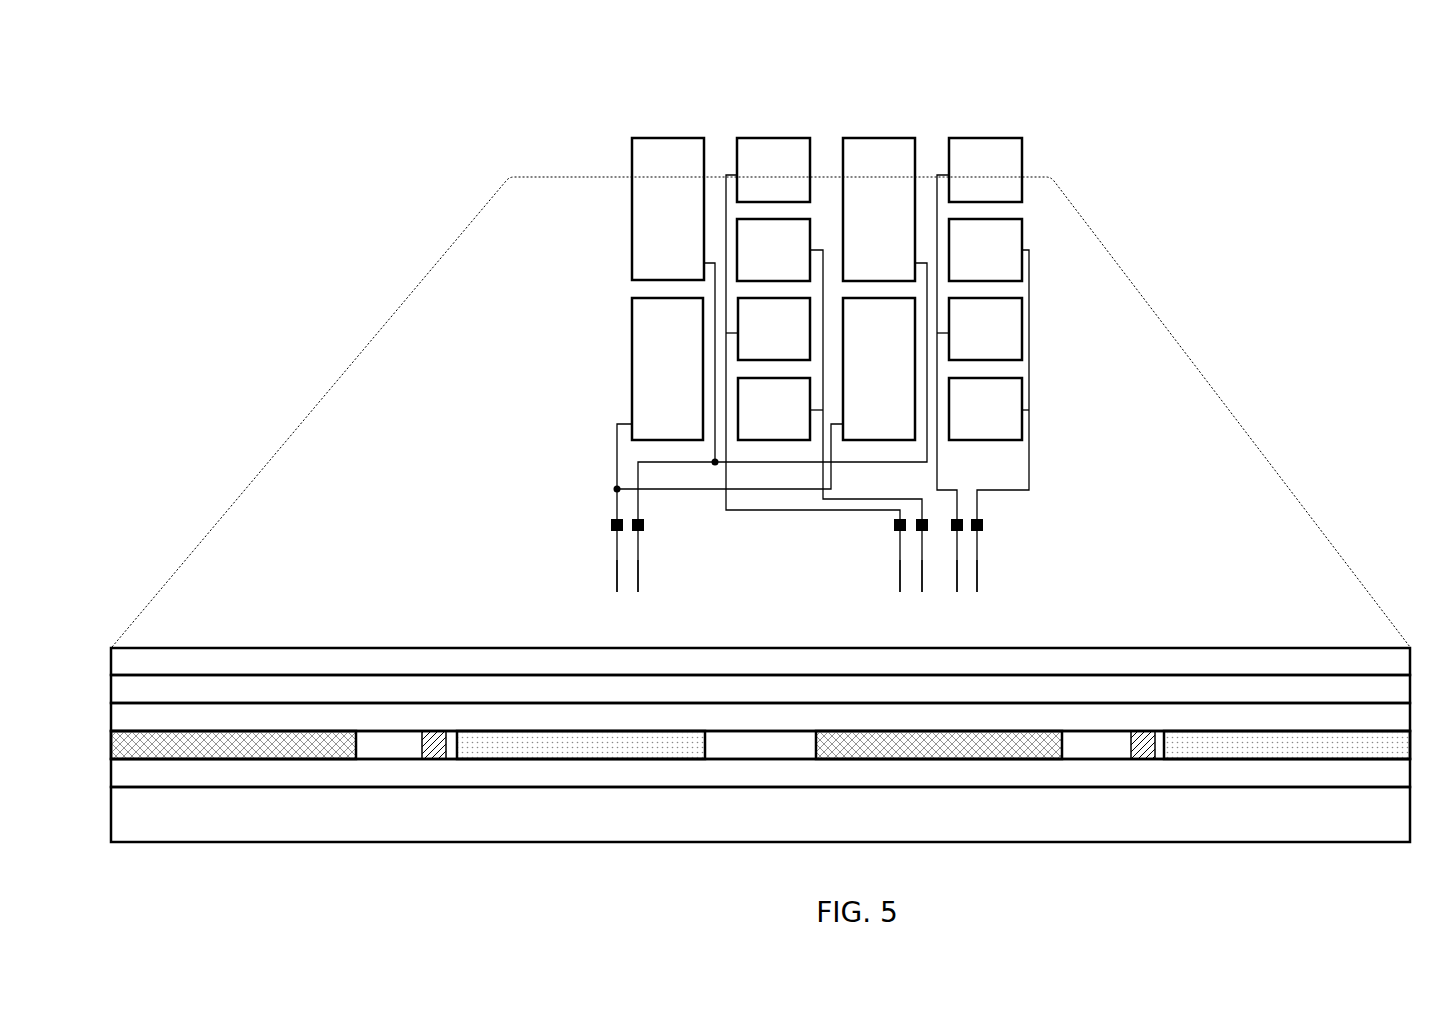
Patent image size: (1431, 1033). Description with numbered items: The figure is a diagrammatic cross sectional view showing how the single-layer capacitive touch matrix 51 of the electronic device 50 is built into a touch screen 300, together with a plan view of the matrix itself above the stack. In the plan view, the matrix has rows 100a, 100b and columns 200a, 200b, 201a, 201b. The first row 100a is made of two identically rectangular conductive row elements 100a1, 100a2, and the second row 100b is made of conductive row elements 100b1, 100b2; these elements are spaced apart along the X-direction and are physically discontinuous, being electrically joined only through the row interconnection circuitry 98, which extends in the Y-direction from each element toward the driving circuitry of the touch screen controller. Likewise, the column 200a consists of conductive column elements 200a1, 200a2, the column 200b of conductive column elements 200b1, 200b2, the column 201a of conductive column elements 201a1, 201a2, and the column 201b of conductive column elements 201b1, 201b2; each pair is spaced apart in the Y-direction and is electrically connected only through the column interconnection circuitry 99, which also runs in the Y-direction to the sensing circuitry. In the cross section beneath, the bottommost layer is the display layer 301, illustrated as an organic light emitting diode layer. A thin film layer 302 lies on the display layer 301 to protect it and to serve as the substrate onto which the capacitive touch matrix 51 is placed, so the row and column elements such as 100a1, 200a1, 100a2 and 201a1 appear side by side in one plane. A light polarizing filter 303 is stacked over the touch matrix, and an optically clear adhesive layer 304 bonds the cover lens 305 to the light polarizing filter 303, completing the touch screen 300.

The capacitive touch matrix 51 is at (620, 52).
The touch screen 300 is at (275, 102).
The first row 100a is at (612, 202).
The second row 100b is at (612, 363).
The conductive row element 100a1 is at (668, 209).
The conductive row element 100a2 is at (879, 209).
The conductive row element 100b1 is at (667, 369).
The conductive row element 100b2 is at (879, 369).
The column 200a is at (772, 117).
The column 200b is at (773, 329).
The conductive column element 200a1 is at (773, 170).
The conductive column element 200a2 is at (774, 329).
The conductive column element 200b1 is at (773, 250).
The conductive column element 200b2 is at (774, 409).
The column 201a is at (983, 117).
The column 201b is at (985, 329).
The conductive column element 201a1 is at (985, 170).
The conductive column element 201a2 is at (985, 329).
The conductive column element 201b1 is at (985, 250).
The conductive column element 201b2 is at (985, 409).
The row interconnection circuitry 98 is at (594, 466).
The column interconnection circuitry 99 is at (797, 576).
The cover lens 305 is at (111, 669).
The optically clear adhesive layer 304 is at (111, 696).
The light polarizing filter 303 is at (111, 723).
The electronic device 50 is at (111, 749).
The thin film layer 302 is at (111, 778).
The display layer 301 is at (111, 819).